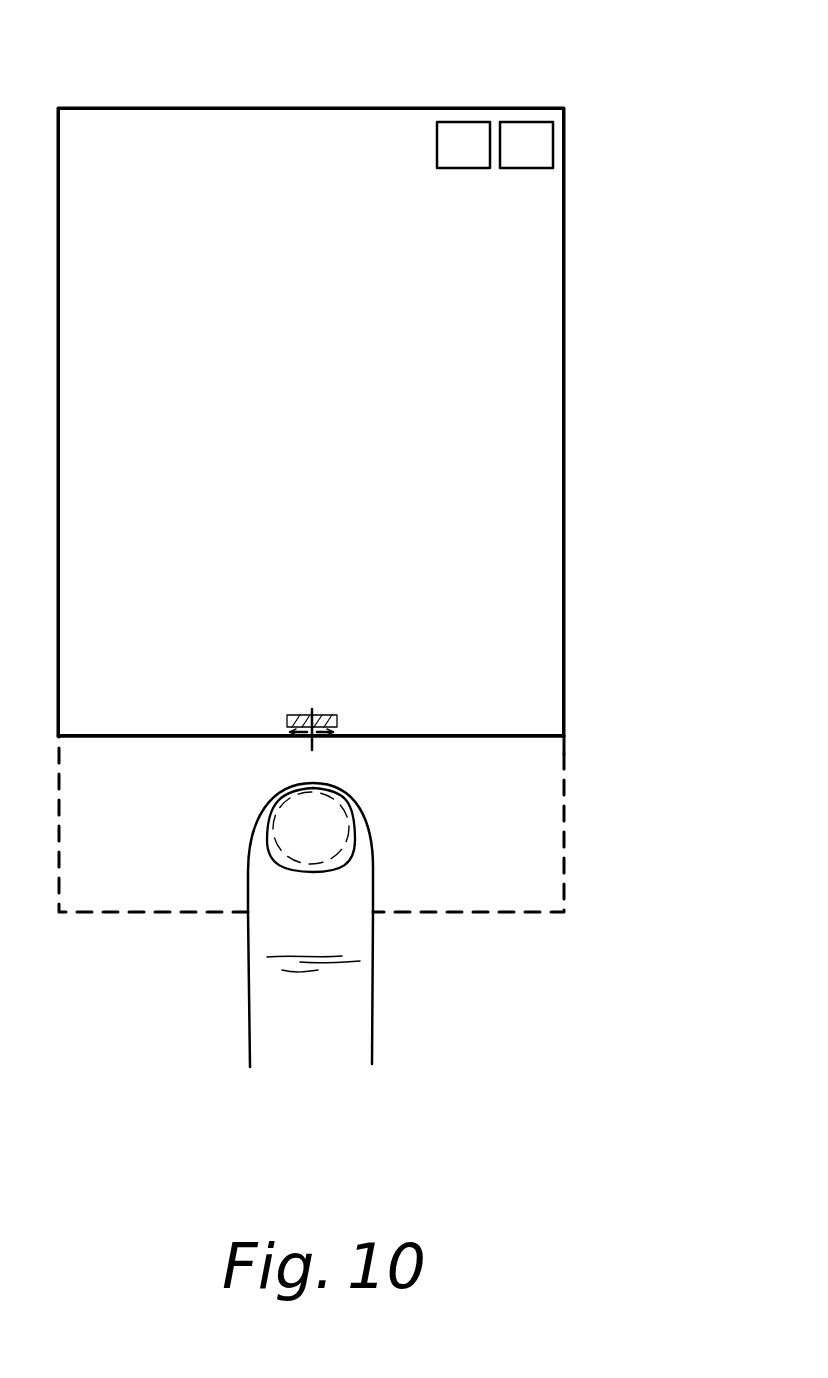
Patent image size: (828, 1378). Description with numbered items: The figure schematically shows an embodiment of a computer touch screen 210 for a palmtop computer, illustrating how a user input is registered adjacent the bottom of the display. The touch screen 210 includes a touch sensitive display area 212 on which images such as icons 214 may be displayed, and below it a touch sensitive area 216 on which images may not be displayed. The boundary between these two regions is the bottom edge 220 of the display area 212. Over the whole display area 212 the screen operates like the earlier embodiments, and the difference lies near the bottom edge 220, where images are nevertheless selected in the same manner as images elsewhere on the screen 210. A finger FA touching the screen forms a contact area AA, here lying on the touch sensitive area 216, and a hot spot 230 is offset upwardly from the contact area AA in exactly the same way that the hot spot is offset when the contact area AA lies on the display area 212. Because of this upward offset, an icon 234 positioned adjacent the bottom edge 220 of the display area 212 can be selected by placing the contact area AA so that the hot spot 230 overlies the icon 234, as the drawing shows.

The computer touch screen 210 is at (357, 76).
The touch sensitive display area 212 is at (527, 302).
The icons 214 is at (578, 129).
The touch sensitive area 216 is at (548, 838).
The bottom edge 220 is at (509, 734).
The hot spot 230 is at (320, 726).
The icon 234 is at (290, 715).
The contact area AA is at (258, 864).
The finger FA is at (376, 865).